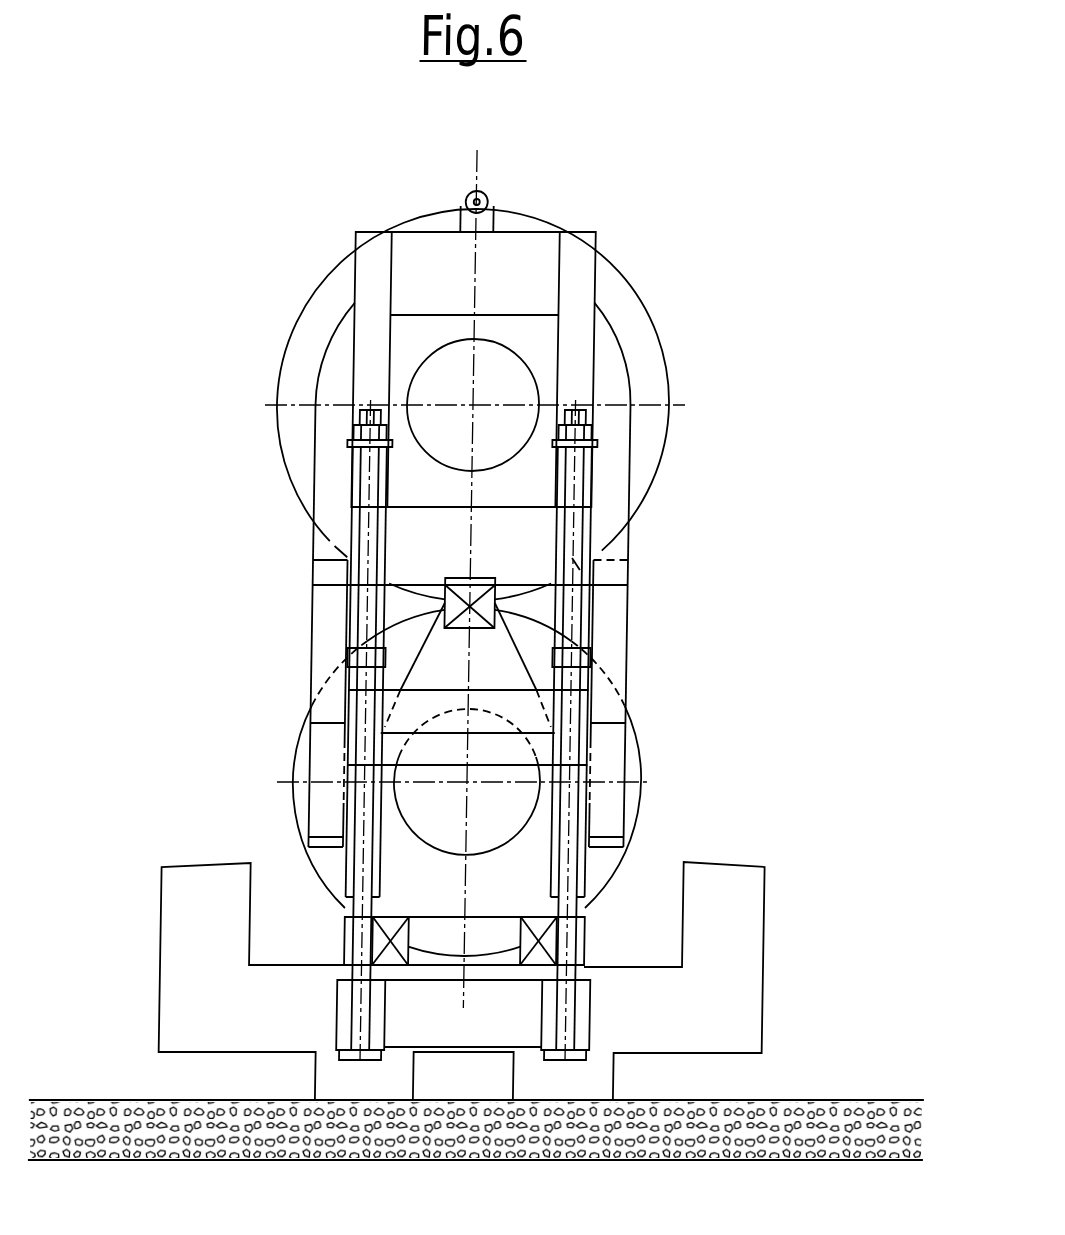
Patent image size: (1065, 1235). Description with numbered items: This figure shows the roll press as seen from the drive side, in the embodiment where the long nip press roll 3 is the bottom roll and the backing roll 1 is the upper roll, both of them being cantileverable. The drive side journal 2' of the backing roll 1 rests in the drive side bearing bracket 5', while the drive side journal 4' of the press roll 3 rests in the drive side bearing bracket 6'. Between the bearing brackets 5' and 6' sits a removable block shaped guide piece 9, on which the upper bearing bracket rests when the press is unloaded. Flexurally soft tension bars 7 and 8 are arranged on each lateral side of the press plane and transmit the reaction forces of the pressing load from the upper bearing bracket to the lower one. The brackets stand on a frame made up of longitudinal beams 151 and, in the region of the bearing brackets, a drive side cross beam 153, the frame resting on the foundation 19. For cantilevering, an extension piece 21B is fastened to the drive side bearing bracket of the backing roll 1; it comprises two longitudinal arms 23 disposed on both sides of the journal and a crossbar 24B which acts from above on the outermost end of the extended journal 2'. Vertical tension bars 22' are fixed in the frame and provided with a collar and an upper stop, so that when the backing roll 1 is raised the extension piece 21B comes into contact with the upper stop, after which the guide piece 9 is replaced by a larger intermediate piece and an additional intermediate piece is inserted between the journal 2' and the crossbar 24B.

The backing roll 1 is at (707, 343).
The drive side journal 2' is at (473, 405).
The long nip press roll 3 is at (713, 745).
The drive side journal 4' is at (466, 807).
The drive side bearing bracket 5' is at (527, 431).
The drive side bearing bracket 6' is at (530, 727).
The tension bar 7 is at (321, 642).
The tension bar 8 is at (621, 630).
The guide piece 9 is at (461, 633).
The foundation 19 is at (879, 1100).
The extension piece 21B is at (617, 232).
The tension bars 22' is at (428, 730).
The longitudinal arms 23 is at (369, 337).
The crossbar 24B is at (517, 245).
The longitudinal beams 151 is at (350, 1013).
The drive side cross beam 153 is at (616, 1078).